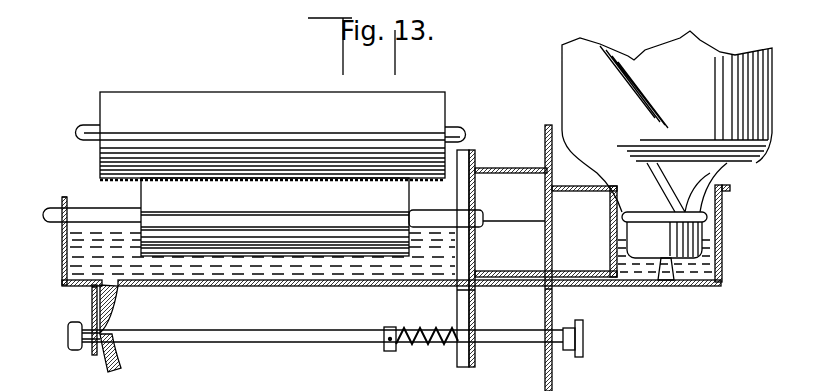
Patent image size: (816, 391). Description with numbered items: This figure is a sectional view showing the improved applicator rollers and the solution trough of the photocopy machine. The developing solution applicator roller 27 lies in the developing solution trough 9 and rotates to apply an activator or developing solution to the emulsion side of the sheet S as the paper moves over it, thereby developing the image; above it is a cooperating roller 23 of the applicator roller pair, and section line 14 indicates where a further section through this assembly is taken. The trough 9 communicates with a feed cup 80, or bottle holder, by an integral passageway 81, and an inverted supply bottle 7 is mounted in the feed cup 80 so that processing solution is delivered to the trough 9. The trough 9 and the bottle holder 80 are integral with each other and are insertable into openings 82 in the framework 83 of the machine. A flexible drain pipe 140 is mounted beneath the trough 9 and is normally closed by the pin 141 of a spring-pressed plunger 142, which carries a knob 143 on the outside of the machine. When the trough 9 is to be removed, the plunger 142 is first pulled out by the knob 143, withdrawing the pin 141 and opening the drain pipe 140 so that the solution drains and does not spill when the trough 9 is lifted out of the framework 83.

The processing solution bottle 7 is at (760, 148).
The solution trough 9 is at (232, 283).
The section line 14- 14 is at (538, 123).
The upper roller 23 is at (152, 108).
The developing solution applicator roller 27 is at (315, 257).
The feed cup 80 is at (722, 260).
The passageway 81 is at (586, 280).
The openings 82 is at (92, 287).
The framework 83 is at (92, 310).
The flexible drain pipe 140 is at (118, 303).
The pin 141 is at (112, 338).
The spring-pressed plunger 142 is at (277, 337).
The knob 143 is at (578, 355).
The sheet S is at (100, 183).